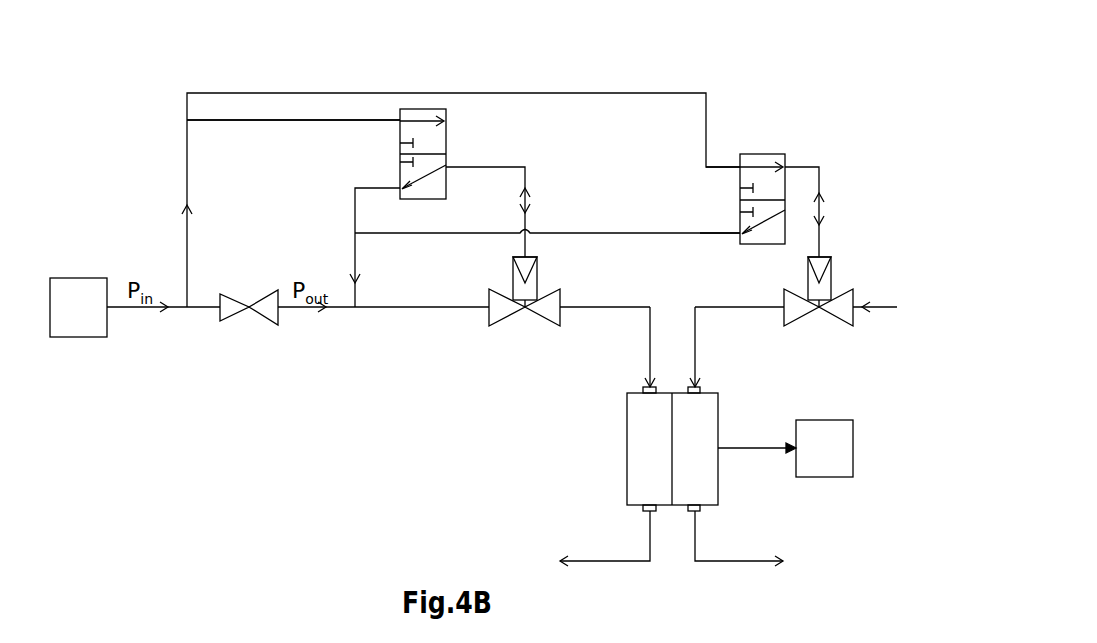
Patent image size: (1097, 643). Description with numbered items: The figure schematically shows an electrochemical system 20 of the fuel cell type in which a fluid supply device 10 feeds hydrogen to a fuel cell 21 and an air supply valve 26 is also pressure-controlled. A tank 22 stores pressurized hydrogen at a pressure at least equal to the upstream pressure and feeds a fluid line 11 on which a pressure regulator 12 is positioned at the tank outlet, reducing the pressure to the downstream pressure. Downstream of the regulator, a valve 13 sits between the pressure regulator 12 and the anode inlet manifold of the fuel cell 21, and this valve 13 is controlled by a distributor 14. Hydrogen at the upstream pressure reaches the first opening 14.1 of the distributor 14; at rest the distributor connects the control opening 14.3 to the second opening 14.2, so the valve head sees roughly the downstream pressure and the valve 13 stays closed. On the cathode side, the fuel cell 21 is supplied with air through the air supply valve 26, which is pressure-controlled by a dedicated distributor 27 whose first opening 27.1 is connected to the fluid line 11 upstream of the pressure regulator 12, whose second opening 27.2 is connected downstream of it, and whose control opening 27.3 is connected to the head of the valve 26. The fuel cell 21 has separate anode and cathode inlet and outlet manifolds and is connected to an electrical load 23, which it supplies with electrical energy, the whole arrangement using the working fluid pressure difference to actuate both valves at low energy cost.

The electrochemical system 20 is at (104, 122).
The fluid supply device 10 is at (563, 170).
The tank 22 is at (72, 338).
The pressure regulator 12 is at (258, 322).
The fluid line 11 is at (401, 312).
The distributor 14 is at (454, 110).
The first opening 14.1 is at (295, 110).
The second opening 14.2 is at (377, 236).
The control opening 14.3 is at (488, 198).
The valve 13 is at (541, 320).
The dedicated distributor 27 is at (767, 150).
The first opening 27.1 is at (716, 181).
The second opening 27.2 is at (716, 247).
The control opening 27.3 is at (812, 201).
The air supply valve 26 is at (836, 320).
The fuel cell 21 is at (658, 358).
The electrical load 23 is at (815, 478).